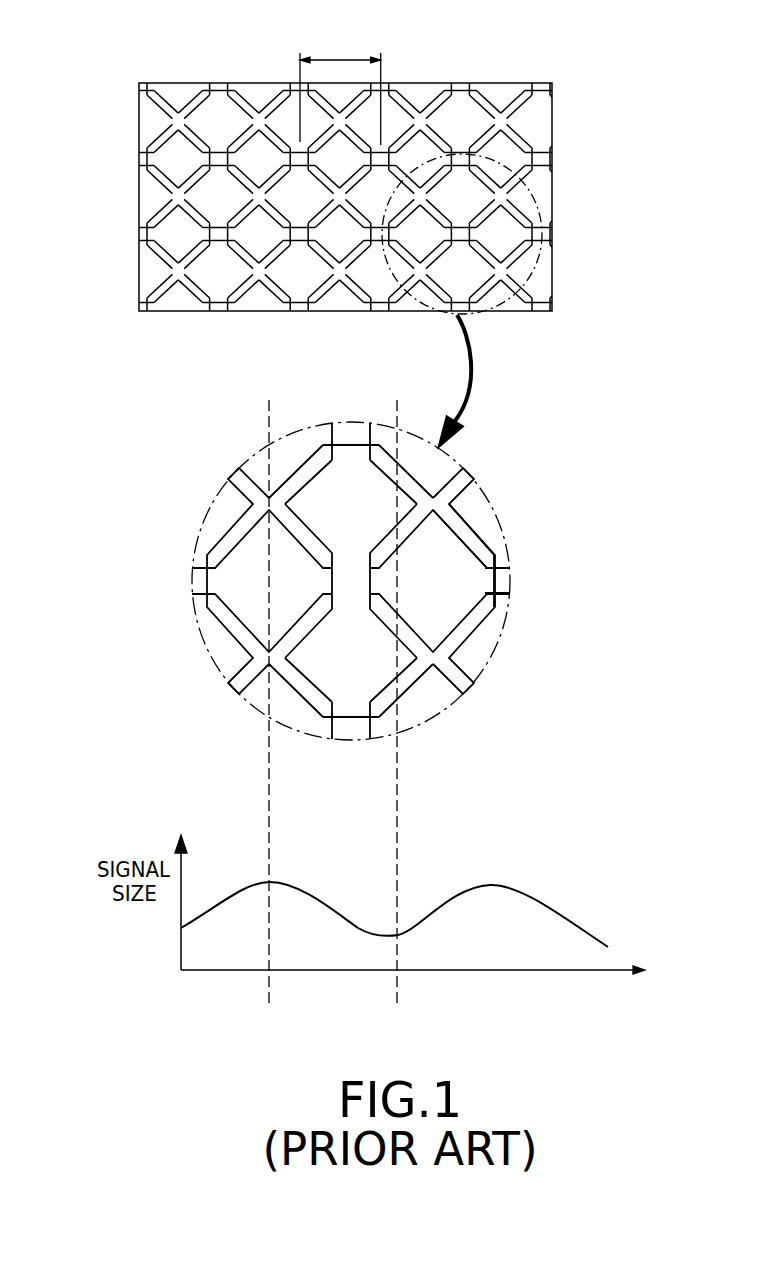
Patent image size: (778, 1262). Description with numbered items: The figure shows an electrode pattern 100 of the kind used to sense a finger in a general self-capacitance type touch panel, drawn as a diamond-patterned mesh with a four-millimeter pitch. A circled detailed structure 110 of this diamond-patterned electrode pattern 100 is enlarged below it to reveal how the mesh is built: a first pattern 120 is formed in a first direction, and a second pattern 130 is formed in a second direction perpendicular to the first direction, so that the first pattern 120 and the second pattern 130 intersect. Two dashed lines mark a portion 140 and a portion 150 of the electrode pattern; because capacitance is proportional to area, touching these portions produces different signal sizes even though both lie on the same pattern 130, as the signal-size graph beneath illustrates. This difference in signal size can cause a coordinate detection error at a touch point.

The electrode pattern 100 is at (498, 62).
The detailed structure 110 is at (538, 263).
The first pattern 120 is at (400, 487).
The second pattern 130 is at (462, 540).
The touched portion 140 is at (256, 582).
The touched portion 150 is at (412, 583).